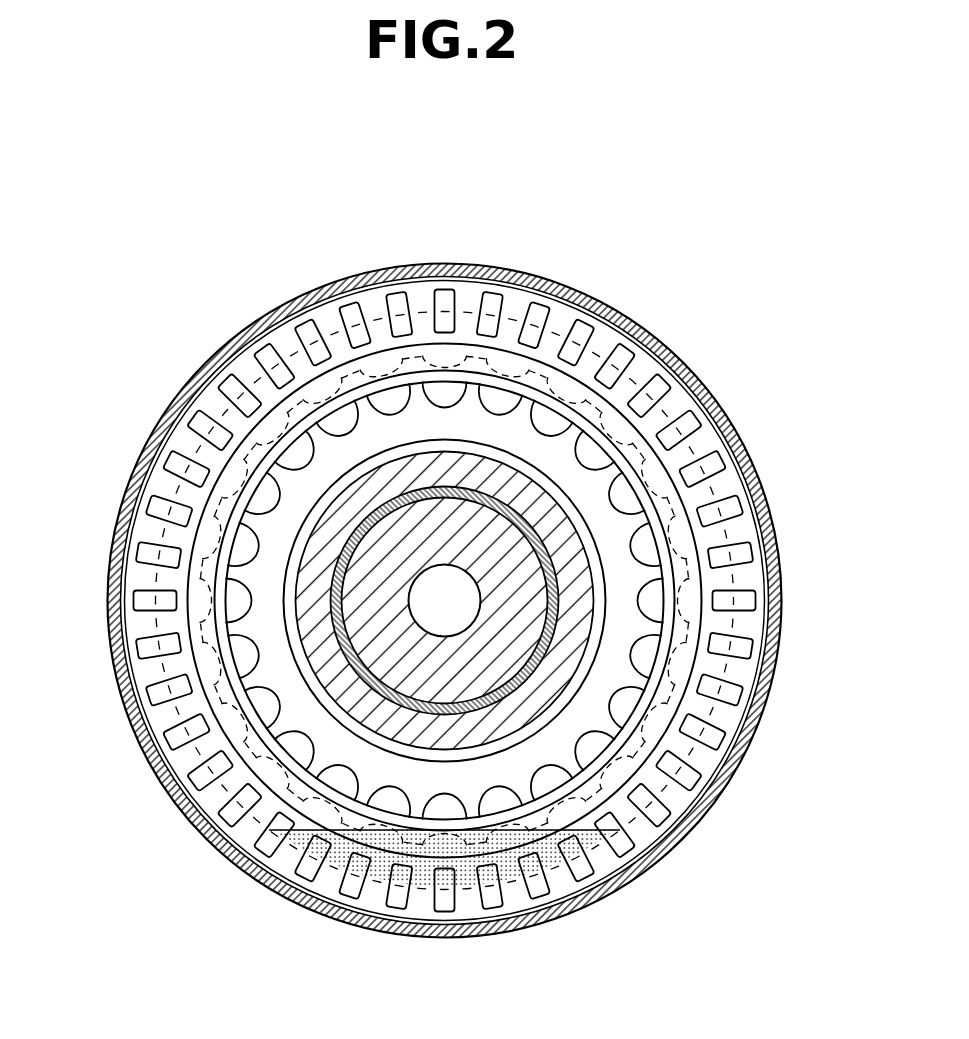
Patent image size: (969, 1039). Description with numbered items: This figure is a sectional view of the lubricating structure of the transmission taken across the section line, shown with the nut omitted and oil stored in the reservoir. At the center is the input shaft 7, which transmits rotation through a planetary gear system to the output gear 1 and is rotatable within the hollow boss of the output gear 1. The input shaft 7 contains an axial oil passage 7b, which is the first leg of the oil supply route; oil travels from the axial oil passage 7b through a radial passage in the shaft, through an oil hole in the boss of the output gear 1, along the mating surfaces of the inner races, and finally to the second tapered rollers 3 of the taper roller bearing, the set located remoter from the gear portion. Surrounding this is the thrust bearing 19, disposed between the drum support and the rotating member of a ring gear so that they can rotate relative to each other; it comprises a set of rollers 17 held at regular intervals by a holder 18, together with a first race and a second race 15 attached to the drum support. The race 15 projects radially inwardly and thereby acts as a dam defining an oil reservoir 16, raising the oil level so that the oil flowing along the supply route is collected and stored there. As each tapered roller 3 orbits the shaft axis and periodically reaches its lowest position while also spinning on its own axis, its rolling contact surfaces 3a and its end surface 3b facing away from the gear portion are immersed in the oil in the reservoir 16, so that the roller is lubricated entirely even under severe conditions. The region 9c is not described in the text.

The output gear 1 is at (365, 707).
The second tapered rollers 3 is at (683, 588).
The rolling contact surfaces 3a is at (690, 610).
The end surface 3b is at (685, 607).
The input shaft 7 is at (365, 619).
The axial oil passage 7b is at (430, 590).
The gap between coils 9c is at (630, 567).
The second race 15 is at (557, 812).
The oil reservoir 16 is at (510, 878).
The rollers 17 is at (598, 335).
The holder 18 is at (513, 305).
The thrust bearing 19 is at (727, 392).